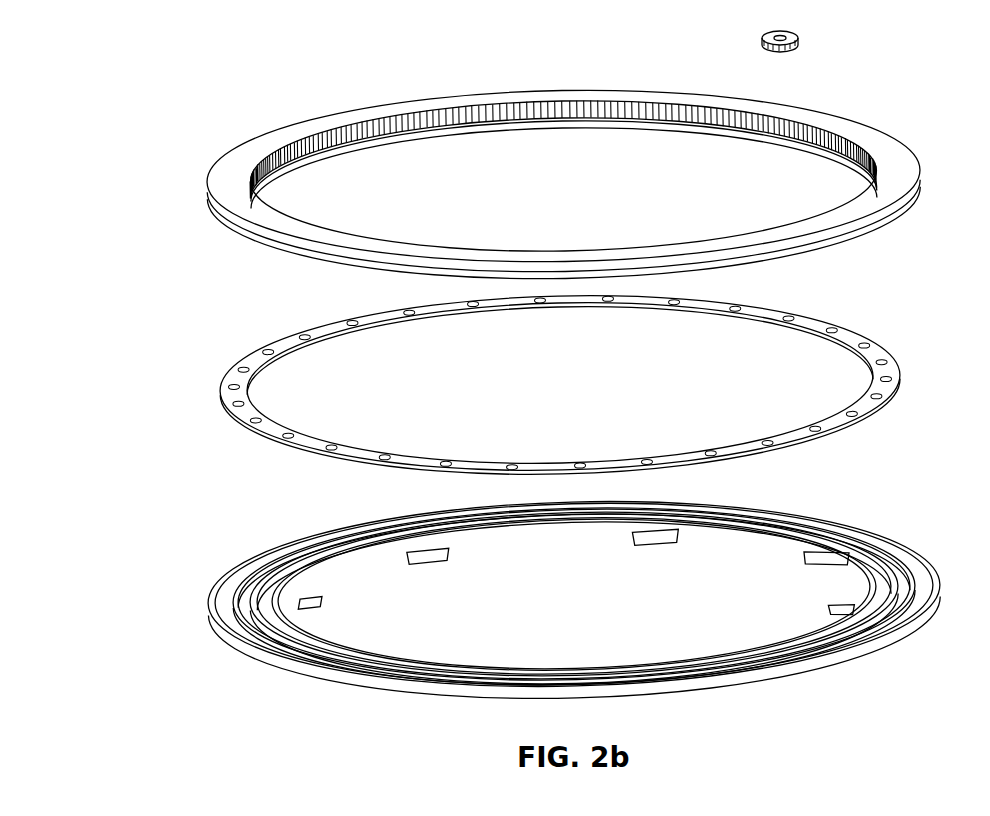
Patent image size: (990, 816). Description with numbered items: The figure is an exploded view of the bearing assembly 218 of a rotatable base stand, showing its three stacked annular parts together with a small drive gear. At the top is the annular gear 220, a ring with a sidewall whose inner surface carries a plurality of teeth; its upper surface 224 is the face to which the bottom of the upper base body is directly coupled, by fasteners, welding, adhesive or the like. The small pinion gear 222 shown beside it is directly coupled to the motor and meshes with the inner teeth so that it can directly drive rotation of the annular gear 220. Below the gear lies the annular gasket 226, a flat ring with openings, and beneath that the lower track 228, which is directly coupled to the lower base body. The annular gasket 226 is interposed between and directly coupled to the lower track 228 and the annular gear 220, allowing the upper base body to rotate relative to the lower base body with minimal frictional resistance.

The bearing assembly 218 is at (200, 322).
The annular gear 220 is at (228, 192).
The pinion gear 222 is at (798, 35).
The upper surface 224 is at (258, 160).
The annular gasket 226 is at (223, 398).
The lower track 228 is at (217, 642).